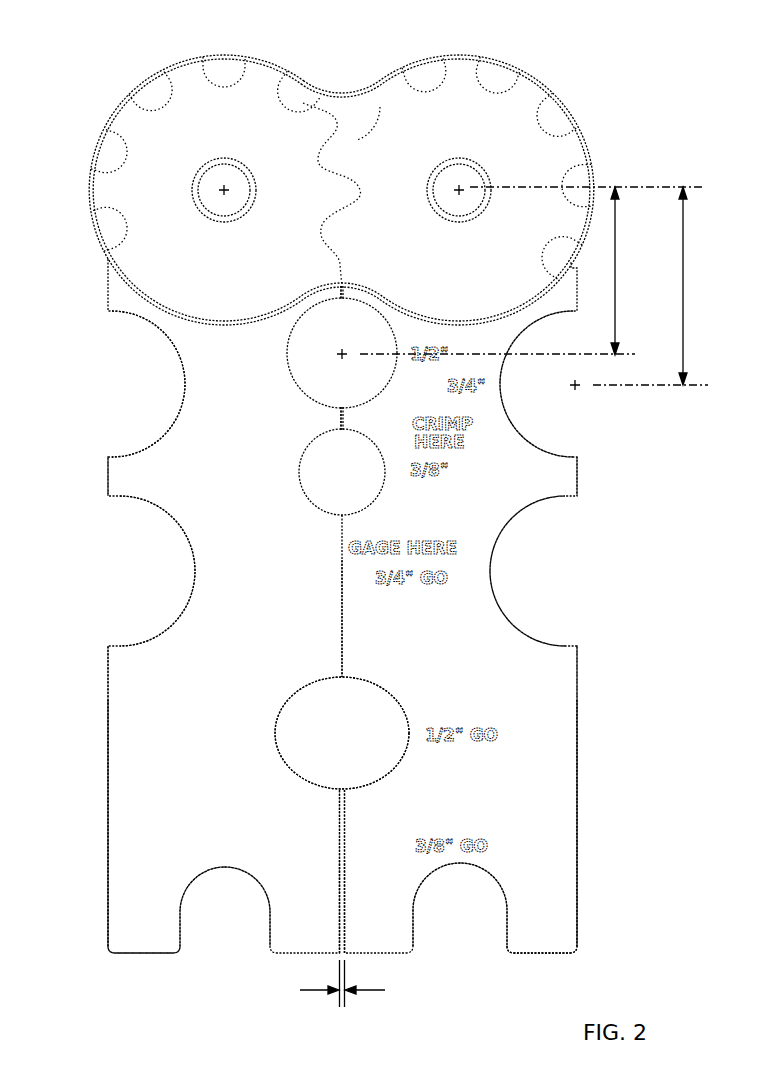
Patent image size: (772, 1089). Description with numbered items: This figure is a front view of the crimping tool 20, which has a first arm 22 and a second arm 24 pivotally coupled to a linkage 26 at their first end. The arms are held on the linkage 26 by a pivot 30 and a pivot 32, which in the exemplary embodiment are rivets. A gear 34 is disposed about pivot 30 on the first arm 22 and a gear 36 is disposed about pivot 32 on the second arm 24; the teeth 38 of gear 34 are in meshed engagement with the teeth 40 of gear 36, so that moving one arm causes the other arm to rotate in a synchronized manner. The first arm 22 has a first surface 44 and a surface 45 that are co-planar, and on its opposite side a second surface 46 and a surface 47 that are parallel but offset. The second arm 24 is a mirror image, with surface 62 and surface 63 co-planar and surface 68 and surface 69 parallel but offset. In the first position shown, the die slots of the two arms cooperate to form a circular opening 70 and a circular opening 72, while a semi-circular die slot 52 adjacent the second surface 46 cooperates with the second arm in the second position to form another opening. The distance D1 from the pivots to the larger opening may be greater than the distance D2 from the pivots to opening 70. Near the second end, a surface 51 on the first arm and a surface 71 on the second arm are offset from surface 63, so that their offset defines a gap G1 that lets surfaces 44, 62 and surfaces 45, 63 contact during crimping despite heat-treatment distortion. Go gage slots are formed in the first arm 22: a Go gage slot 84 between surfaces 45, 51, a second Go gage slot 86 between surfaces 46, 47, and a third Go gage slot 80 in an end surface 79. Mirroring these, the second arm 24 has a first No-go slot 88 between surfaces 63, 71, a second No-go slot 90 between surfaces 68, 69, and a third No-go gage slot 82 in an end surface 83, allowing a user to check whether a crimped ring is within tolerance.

The crimping tool 20 is at (697, 93).
The first arm 22 is at (551, 813).
The second arm 24 is at (157, 779).
The linkage 26 is at (502, 65).
The pivot 30 is at (467, 219).
The pivot 32 is at (215, 219).
The gear 34 is at (552, 110).
The gear 36 is at (112, 146).
The teeth 38 is at (567, 125).
The teeth 40 is at (150, 108).
The first surface 44 is at (356, 290).
The surface 45 is at (343, 612).
The second surface 46 is at (577, 476).
The surface 47 is at (578, 716).
The surface 51 is at (345, 838).
The die slot 52 is at (152, 446).
The surface 62 is at (340, 290).
The surface 63 is at (340, 582).
The surface 68 is at (108, 493).
The surface 69 is at (108, 712).
The circular opening 70 is at (342, 353).
The surface 71 is at (338, 880).
The circular opening 72 is at (342, 472).
The end surface 79 is at (542, 953).
The third Go gage slot 80 is at (457, 930).
The third No-go gage slot 82 is at (232, 922).
The end surface 83 is at (148, 953).
The Go gage slot 84 is at (403, 700).
The second Go gage slot 86 is at (552, 642).
The first No-go slot 88 is at (283, 760).
The second No-go slot 90 is at (162, 634).
The distance D1 is at (684, 305).
The distance D2 is at (616, 283).
The gap G1 is at (327, 983).